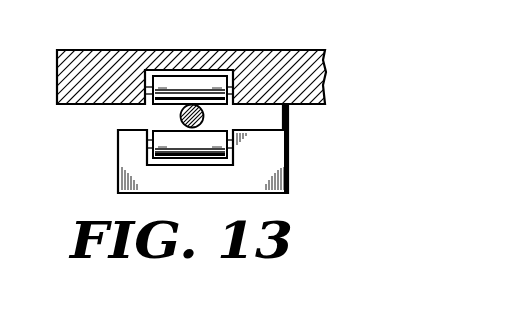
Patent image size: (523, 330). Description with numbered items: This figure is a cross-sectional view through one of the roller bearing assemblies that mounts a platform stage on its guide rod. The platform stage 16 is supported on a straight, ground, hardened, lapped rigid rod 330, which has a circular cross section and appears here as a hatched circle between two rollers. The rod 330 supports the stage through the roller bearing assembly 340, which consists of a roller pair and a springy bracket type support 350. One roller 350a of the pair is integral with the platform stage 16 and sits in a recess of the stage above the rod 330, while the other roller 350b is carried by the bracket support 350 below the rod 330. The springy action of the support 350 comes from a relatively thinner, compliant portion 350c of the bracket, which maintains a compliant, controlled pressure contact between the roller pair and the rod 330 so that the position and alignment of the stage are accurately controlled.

The platform stage 16 is at (228, 50).
The rigid rod 330 is at (181, 115).
The roller bearing assembly 340 is at (118, 152).
The springy bracket type support 350 is at (288, 167).
The roller 350a is at (181, 82).
The roller 350b is at (200, 140).
The compliant portion of the bracket 350c is at (288, 121).